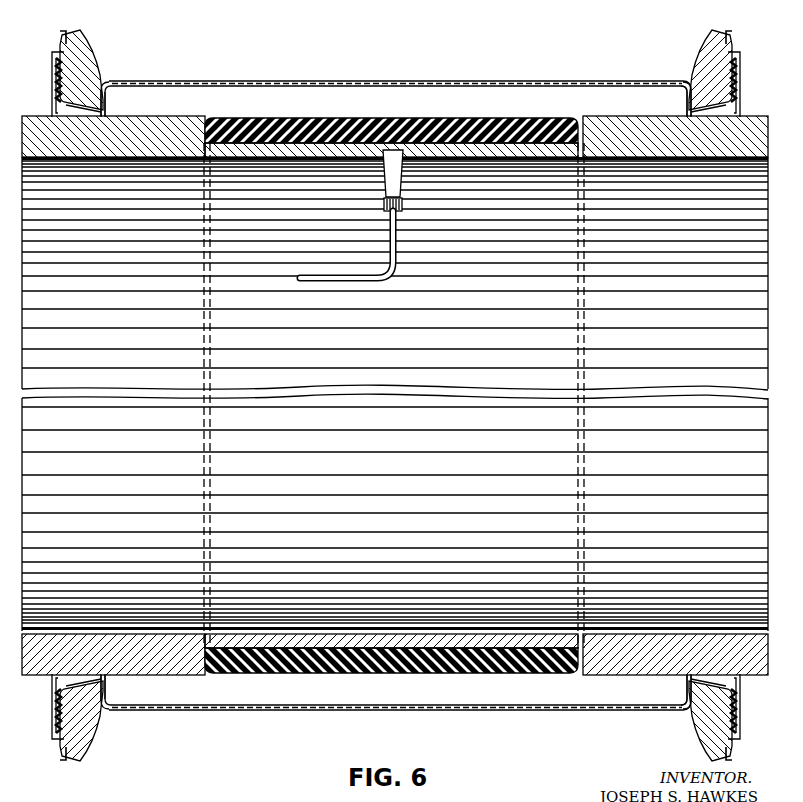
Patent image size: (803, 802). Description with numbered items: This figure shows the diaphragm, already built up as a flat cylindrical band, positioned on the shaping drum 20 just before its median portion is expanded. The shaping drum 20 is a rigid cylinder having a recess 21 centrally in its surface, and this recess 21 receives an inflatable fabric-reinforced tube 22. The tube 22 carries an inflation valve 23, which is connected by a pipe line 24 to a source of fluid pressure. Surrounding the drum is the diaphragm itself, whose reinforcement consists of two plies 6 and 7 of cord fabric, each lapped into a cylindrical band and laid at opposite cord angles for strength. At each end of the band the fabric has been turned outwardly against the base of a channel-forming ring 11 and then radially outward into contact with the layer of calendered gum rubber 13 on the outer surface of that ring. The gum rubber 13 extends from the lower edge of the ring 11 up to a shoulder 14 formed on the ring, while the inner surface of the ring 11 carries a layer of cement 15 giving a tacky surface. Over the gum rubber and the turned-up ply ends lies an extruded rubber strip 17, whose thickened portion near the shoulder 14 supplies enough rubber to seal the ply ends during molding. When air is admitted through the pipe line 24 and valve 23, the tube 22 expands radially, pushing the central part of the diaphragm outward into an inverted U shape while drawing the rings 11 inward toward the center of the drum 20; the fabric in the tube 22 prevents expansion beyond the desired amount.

The ply 6 is at (300, 81).
The ply 7 is at (462, 86).
The channel-forming ring 11 is at (80, 48).
The layer of calendered gum rubber 13 is at (62, 33).
The shoulder 14 is at (52, 55).
The layer of cement 15 is at (106, 82).
The rubber strip 17 is at (52, 76).
The shaping drum 20 is at (180, 132).
The recess 21 is at (578, 120).
The inflatable fabric-reinforced tube 22 is at (288, 122).
The inflation valve 23 is at (407, 140).
The pipe line 24 is at (335, 282).